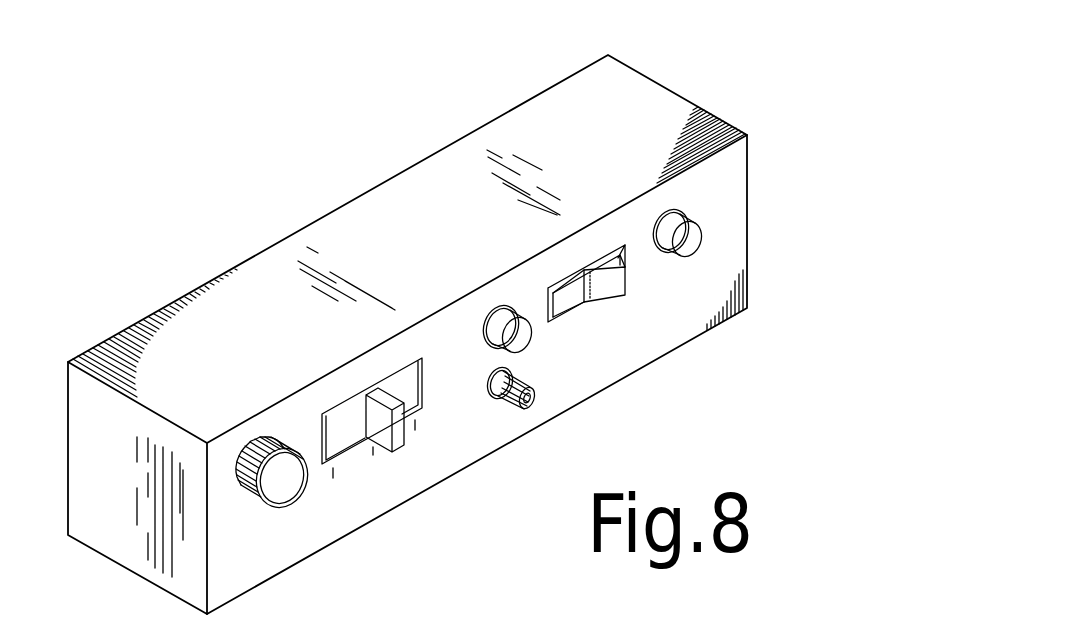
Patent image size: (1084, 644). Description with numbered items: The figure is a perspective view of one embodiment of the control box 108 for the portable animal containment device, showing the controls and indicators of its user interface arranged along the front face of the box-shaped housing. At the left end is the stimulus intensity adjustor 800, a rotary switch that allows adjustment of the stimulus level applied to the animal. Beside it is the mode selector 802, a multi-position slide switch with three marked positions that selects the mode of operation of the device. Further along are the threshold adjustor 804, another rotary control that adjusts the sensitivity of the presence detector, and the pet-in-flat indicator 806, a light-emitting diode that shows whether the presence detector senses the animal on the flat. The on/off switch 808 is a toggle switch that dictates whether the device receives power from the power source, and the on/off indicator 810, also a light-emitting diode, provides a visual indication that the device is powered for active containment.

The control box 108 is at (667, 89).
The stimulus intensity adjustor 800 is at (272, 488).
The mode selector 802 is at (398, 445).
The threshold adjustor 804 is at (533, 406).
The pet-in-flat indicator 806 is at (523, 340).
The on/off switch 808 is at (612, 288).
The on/off indicator 810 is at (690, 240).